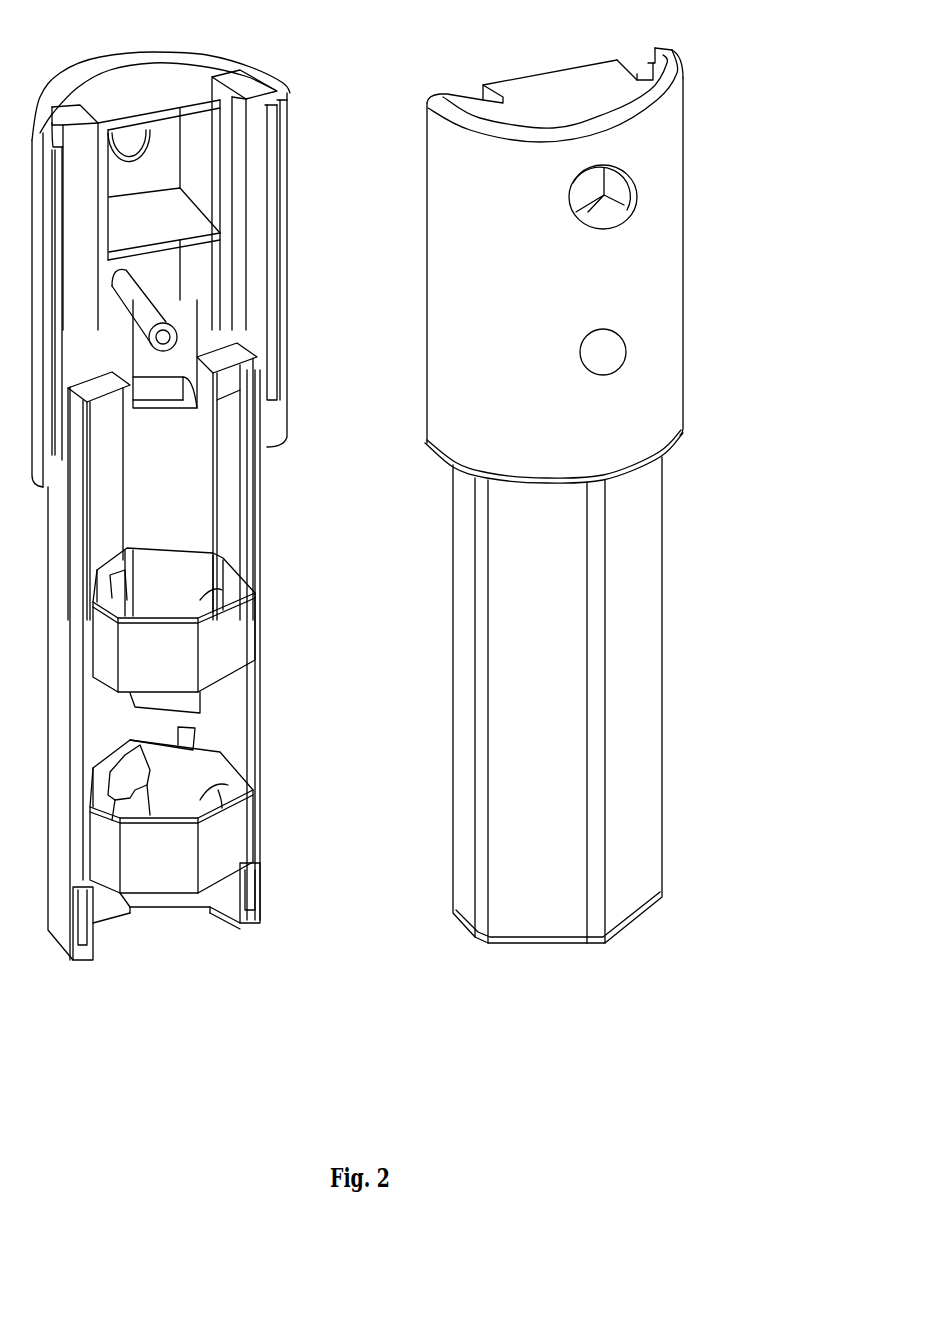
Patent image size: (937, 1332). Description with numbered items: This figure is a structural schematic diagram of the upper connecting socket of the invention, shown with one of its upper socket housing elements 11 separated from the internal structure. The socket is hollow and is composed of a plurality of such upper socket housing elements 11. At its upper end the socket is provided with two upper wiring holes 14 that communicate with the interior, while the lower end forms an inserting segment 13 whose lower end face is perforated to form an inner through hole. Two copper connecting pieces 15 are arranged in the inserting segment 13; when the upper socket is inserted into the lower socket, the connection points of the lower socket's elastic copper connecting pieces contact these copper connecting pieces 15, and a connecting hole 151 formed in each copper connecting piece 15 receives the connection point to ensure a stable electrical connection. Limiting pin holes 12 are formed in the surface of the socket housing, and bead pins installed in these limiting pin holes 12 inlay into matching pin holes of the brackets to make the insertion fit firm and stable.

The upper socket housing element 11 is at (694, 157).
The limiting pin hole 12 is at (626, 203).
The inserting segment 13 is at (650, 745).
The upper wiring hole 14 is at (250, 88).
The copper connecting piece 15 is at (236, 630).
The connecting hole 151 is at (219, 497).